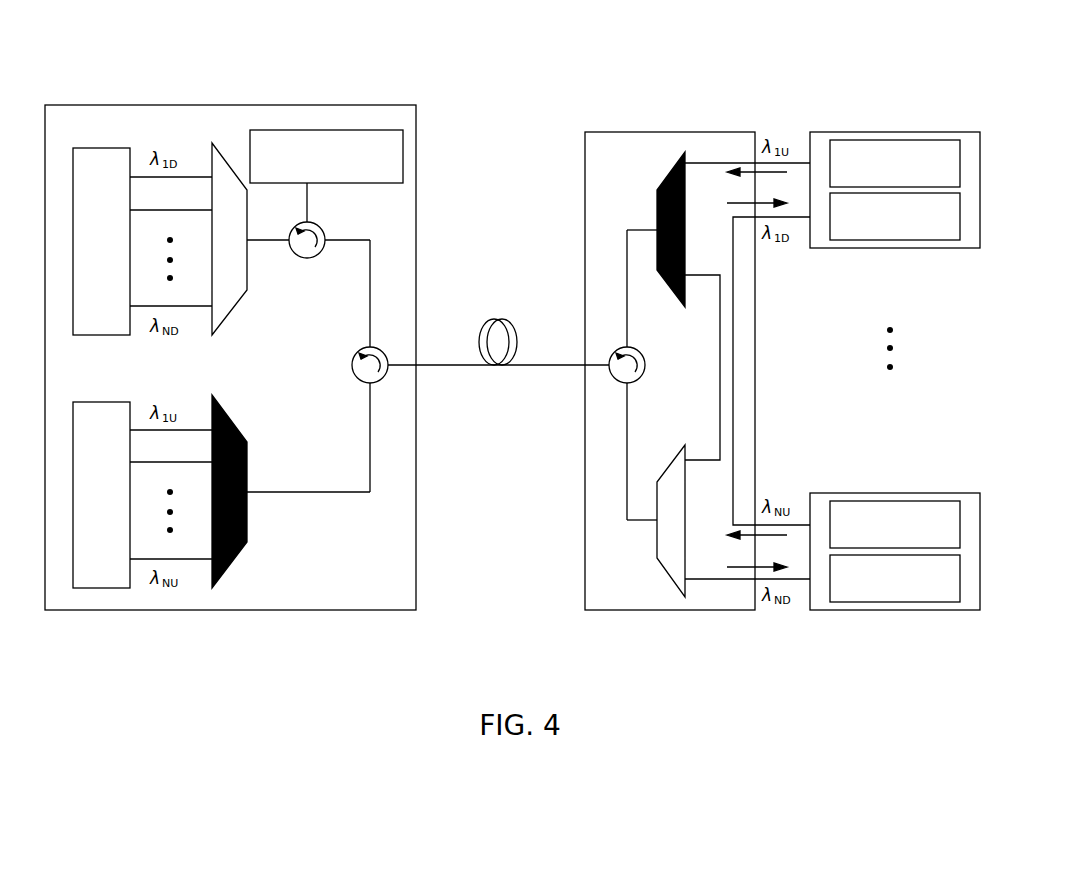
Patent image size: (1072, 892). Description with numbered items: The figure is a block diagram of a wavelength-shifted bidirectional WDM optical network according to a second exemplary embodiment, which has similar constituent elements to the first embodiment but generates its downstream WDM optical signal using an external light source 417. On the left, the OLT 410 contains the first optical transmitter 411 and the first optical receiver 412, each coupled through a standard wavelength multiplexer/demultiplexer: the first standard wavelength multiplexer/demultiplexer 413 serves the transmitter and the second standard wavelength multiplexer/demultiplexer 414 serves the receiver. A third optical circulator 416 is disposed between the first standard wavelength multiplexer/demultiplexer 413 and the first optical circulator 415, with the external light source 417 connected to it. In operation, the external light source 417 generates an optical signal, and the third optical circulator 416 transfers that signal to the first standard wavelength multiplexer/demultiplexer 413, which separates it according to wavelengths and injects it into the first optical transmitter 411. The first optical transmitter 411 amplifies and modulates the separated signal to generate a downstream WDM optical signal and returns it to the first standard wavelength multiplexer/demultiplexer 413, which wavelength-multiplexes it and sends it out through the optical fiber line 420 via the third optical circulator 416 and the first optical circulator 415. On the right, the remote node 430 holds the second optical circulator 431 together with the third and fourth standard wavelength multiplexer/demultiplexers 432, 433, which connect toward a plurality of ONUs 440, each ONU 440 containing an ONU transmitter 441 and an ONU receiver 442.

The OLT 410 is at (383, 105).
The first optical transmitter 411 is at (100, 148).
The first optical receiver 412 is at (102, 588).
The first standard wavelength multiplexer/demultiplexer 413 is at (222, 158).
The second standard wavelength multiplexer/demultiplexer 414 is at (229, 565).
The first optical circulator 415 is at (383, 380).
The third optical circulator 416 is at (325, 228).
The external light source 417 is at (300, 130).
The optical fiber line 420 is at (500, 318).
The remote node 430 is at (703, 132).
The second optical circulator 431 is at (612, 378).
The third standard wavelength multiplexer/demultiplexer 432 is at (663, 177).
The fourth standard wavelength multiplexer/demultiplexer 433 is at (668, 572).
The ONU 440 is at (888, 132).
The ONU transmitter 441 is at (960, 165).
The ONU receiver 442 is at (960, 215).